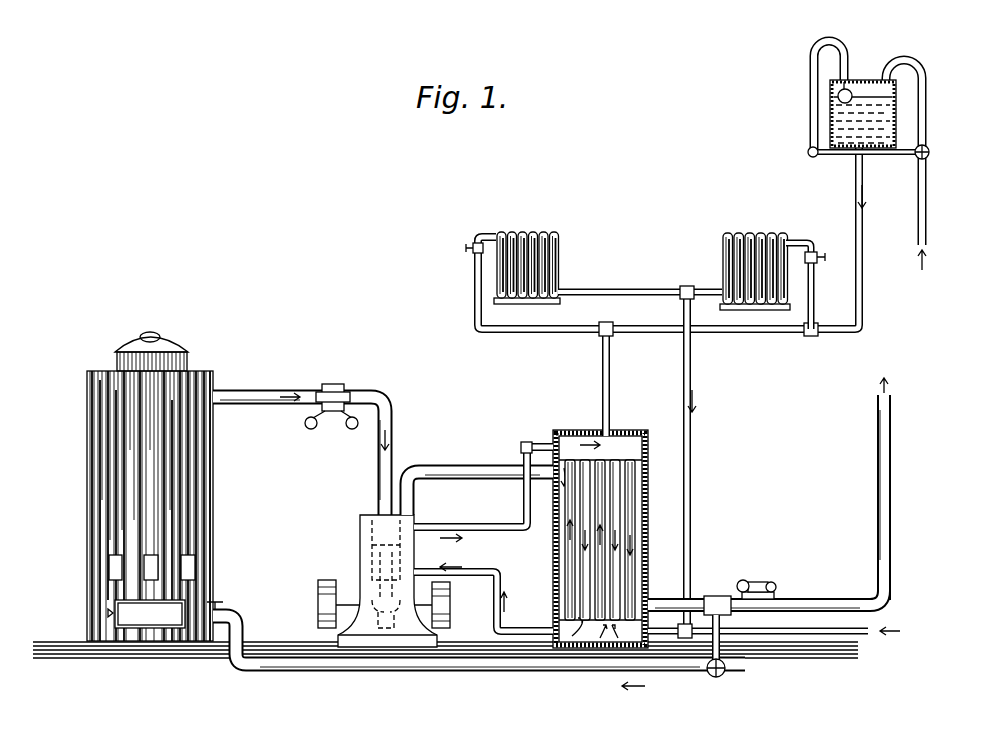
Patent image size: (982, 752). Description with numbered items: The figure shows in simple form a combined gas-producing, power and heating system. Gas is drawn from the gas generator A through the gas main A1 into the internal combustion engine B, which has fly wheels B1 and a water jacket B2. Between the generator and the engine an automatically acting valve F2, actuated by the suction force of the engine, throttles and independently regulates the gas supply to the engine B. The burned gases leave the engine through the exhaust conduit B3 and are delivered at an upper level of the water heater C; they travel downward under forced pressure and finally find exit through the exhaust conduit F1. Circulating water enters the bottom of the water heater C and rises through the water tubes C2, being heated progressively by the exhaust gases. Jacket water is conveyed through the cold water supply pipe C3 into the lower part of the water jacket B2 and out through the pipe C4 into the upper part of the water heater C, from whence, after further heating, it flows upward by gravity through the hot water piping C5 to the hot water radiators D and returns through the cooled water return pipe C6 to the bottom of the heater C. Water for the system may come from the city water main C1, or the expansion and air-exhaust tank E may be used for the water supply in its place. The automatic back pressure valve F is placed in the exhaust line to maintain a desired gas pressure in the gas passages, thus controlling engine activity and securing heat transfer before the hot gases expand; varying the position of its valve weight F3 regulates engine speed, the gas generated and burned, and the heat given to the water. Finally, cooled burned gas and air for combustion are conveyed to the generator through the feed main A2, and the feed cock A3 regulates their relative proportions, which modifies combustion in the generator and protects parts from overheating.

The gas generator A is at (134, 486).
The gas main for unburned gas A1 is at (276, 402).
The cool burned gas and air feed main A2 is at (352, 671).
The cooled burned gas and air feed cock A3 is at (724, 676).
The internal combustion engine B is at (381, 581).
The fly wheels B1 is at (318, 604).
The water jacket B2 is at (368, 520).
The exhaust conduit to water heater B3 is at (482, 464).
The water heater C is at (611, 539).
The city water main C1 is at (800, 637).
The water tubes C2 is at (588, 580).
The cold water supply for the water jacket C3 is at (504, 598).
The hot water from jacket to water heater C4 is at (490, 523).
The hot water piping to radiating system C5 is at (532, 334).
The cooled water return pipe C6 is at (700, 410).
The hot water radiator D is at (560, 262).
The expansion and air-exhaust tank E is at (846, 112).
The automatic back pressure valve F is at (760, 590).
The exhaust conduit F1 is at (892, 510).
The automatically acting valve F2 is at (336, 414).
The valve weight F3 is at (778, 588).